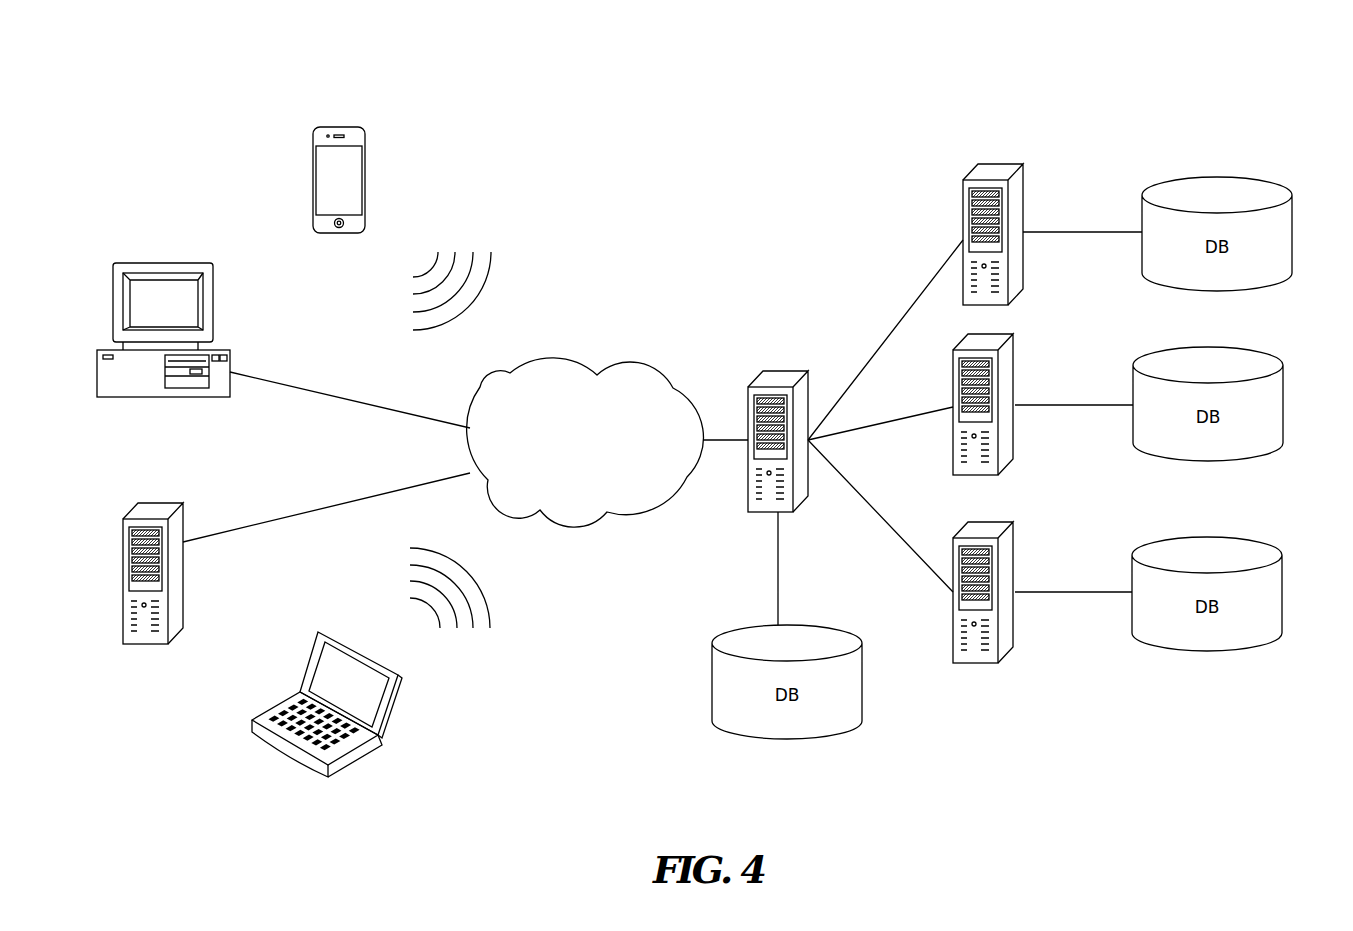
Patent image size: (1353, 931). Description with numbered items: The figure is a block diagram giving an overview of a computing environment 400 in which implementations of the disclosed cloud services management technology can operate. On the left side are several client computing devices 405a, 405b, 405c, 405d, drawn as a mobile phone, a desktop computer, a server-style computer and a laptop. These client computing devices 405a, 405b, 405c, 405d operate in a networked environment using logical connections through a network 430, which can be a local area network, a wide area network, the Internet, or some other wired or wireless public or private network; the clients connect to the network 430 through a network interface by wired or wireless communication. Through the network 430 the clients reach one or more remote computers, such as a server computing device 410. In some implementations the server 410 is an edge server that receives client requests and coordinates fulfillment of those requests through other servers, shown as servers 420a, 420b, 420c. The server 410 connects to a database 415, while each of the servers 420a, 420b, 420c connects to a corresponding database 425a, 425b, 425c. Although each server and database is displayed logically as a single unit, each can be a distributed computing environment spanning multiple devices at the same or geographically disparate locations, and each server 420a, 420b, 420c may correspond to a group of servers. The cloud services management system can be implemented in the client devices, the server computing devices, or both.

The environment 400 is at (803, 134).
The client computing device 405a is at (353, 126).
The client computing device 405b is at (202, 264).
The client computing device 405c is at (175, 505).
The client computing device 405d is at (394, 707).
The network 430 is at (640, 360).
The server computing device 410 is at (795, 370).
The database 415 is at (840, 628).
The server 420a is at (1022, 166).
The server 420b is at (1014, 338).
The server 420c is at (1013, 523).
The database 425a is at (1212, 178).
The database 425b is at (1203, 348).
The database 425c is at (1200, 535).